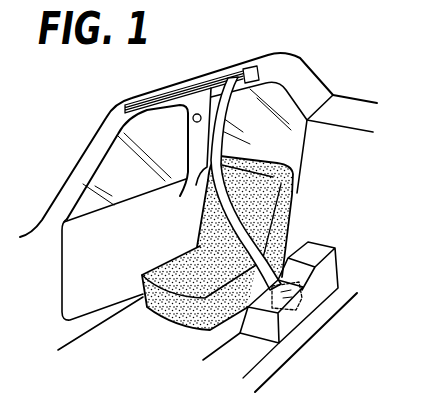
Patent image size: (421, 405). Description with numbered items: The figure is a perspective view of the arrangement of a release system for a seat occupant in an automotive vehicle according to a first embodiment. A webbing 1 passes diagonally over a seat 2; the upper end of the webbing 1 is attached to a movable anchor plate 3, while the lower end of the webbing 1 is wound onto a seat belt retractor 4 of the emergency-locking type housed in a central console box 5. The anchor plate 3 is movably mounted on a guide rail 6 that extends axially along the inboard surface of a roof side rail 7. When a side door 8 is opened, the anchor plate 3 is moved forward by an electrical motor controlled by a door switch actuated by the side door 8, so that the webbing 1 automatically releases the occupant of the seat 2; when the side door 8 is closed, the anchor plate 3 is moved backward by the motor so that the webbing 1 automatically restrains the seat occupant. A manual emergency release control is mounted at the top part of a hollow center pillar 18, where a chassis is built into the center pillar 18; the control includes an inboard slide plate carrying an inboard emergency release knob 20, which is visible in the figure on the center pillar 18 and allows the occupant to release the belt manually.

The webbing 1 is at (243, 243).
The seat 2 is at (265, 158).
The movable anchor plate 3 is at (257, 66).
The seat belt retractor 4 is at (298, 277).
The central console box 5 is at (267, 330).
The guide rail 6 is at (182, 95).
The roof side rail 7 is at (132, 97).
The side door 8 is at (83, 233).
The center pillar 18 is at (193, 177).
The inboard emergency release knob 20 is at (192, 121).